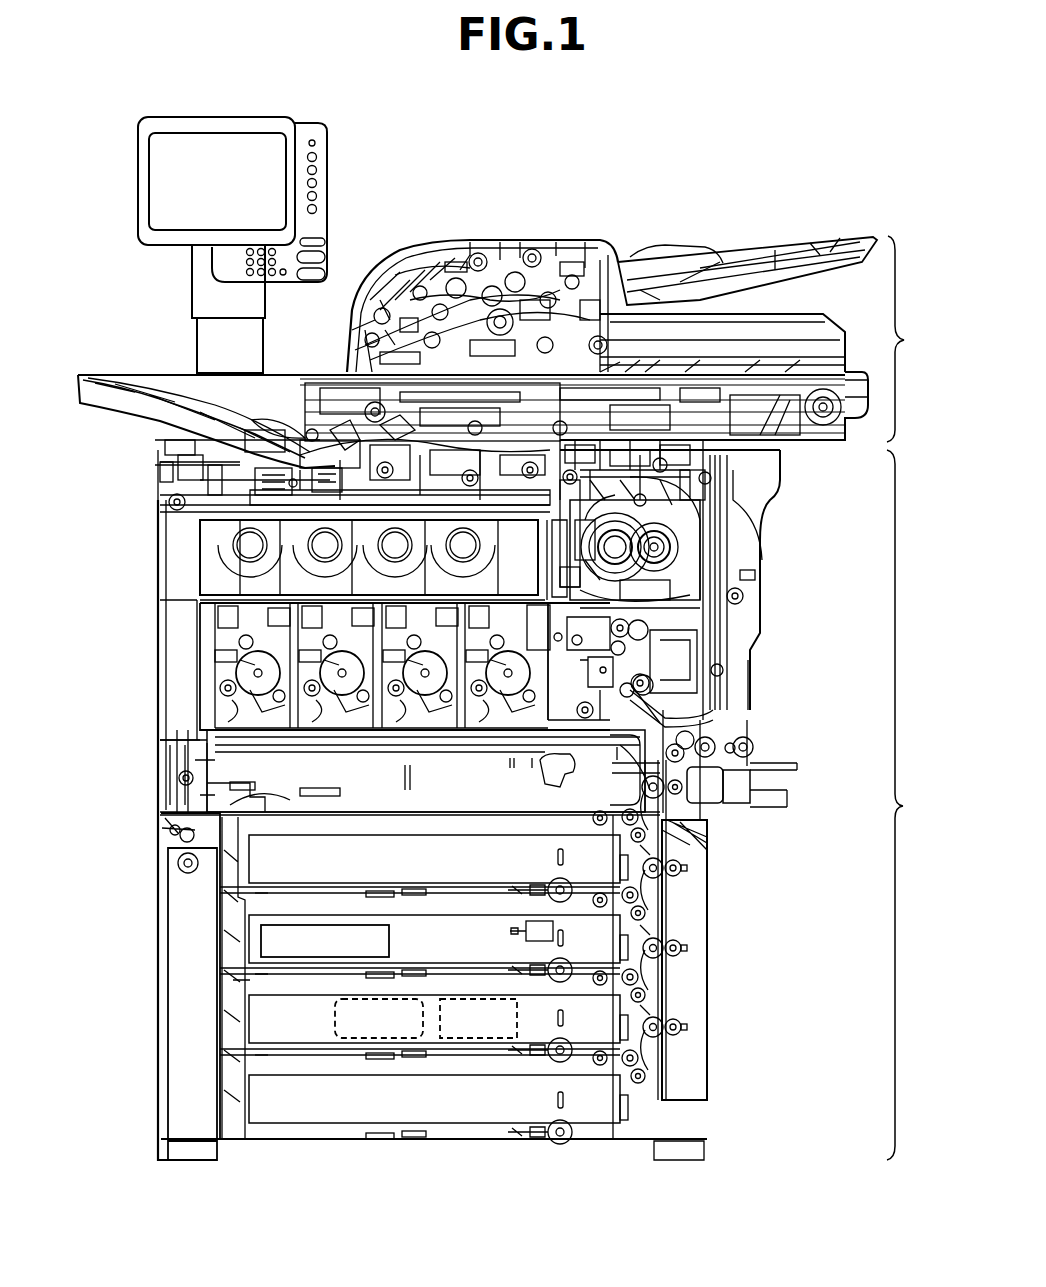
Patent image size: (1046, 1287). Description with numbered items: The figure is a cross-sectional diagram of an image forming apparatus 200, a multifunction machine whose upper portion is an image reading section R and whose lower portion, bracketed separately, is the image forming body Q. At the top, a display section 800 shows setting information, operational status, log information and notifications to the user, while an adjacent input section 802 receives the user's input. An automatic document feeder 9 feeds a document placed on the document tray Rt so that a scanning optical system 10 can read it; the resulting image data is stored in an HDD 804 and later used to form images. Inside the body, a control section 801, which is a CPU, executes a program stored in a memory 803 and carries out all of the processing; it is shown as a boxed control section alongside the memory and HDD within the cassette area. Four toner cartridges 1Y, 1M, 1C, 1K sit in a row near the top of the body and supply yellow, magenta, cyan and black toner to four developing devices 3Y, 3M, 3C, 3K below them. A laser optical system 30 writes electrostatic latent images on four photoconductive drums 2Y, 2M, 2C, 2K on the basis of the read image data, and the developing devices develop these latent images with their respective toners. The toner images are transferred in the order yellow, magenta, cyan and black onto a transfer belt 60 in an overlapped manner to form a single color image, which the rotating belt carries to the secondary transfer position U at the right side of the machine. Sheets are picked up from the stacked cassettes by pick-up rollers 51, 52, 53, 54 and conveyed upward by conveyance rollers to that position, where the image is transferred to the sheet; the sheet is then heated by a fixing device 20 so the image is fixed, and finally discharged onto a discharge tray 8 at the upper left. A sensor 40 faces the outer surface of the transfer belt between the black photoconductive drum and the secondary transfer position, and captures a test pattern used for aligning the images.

The display section 800 is at (250, 117).
The input section 802 is at (322, 168).
The automatic document feeder 9 is at (367, 275).
The image forming apparatus 200 is at (661, 215).
The document tray Rt is at (752, 257).
The image reading section R is at (906, 339).
The image forming section Q is at (910, 805).
The discharge tray 8 is at (165, 373).
The scanning optical system 10 is at (350, 350).
The toner cartridge 1Y is at (212, 553).
The toner cartridge 1M is at (290, 560).
The toner cartridge 1C is at (365, 558).
The toner cartridge 1K is at (488, 556).
The transfer belt 60 is at (516, 600).
The photoconductive drum 2Y is at (276, 656).
The photoconductive drum 2M is at (358, 656).
The photoconductive drum 2C is at (440, 656).
The photoconductive drum 2K is at (522, 656).
The developing device 3Y is at (250, 708).
The developing device 3M is at (300, 715).
The developing device 3C is at (390, 715).
The developing device 3K is at (470, 715).
The fixing device 20 is at (712, 575).
The secondary transfer position U is at (648, 628).
The laser optical system 30 is at (549, 778).
The sensor 40 is at (560, 770).
The pick-up roller 51 is at (608, 832).
The pick-up roller 52 is at (608, 912).
The pick-up roller 53 is at (608, 993).
The pick-up roller 54 is at (608, 1074).
The control section 801 is at (391, 950).
The memory 803 is at (356, 1040).
The HDD 804 is at (472, 1040).